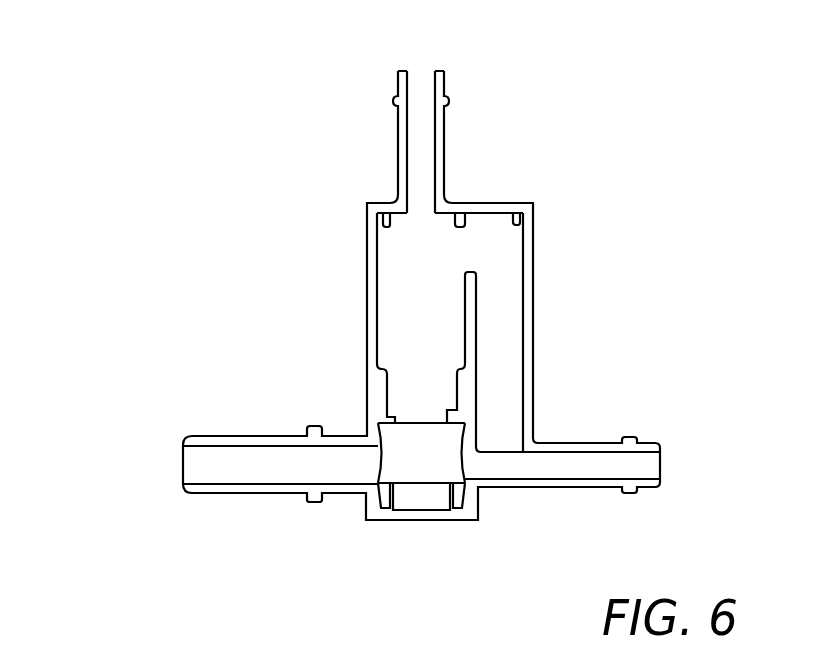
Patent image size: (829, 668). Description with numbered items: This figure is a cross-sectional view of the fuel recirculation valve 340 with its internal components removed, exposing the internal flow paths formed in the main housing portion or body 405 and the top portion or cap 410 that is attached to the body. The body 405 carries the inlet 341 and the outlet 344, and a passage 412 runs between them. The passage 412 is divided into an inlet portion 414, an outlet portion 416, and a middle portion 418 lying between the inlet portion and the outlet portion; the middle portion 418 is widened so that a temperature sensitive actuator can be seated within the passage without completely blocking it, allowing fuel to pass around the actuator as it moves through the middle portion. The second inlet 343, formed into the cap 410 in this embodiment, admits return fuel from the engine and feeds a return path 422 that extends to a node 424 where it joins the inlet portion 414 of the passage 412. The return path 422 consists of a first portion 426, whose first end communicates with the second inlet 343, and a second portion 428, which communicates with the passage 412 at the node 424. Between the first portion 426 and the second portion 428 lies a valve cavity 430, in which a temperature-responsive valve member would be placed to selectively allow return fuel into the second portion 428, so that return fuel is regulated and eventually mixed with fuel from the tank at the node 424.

The fuel recirculation valve 340 is at (165, 194).
The second inlet 343 is at (420, 71).
The first portion 426 is at (430, 115).
The cap 410 is at (403, 128).
The valve cavity 430 is at (422, 276).
The body 405 is at (373, 318).
The return path 422 is at (493, 297).
The second portion 428 is at (500, 355).
The node 424 is at (500, 453).
The inlet portion 414 is at (535, 465).
The passage 412 is at (567, 463).
The inlet 341 is at (663, 451).
The middle portion 418 is at (418, 458).
The outlet portion 416 is at (268, 465).
The outlet 344 is at (182, 463).